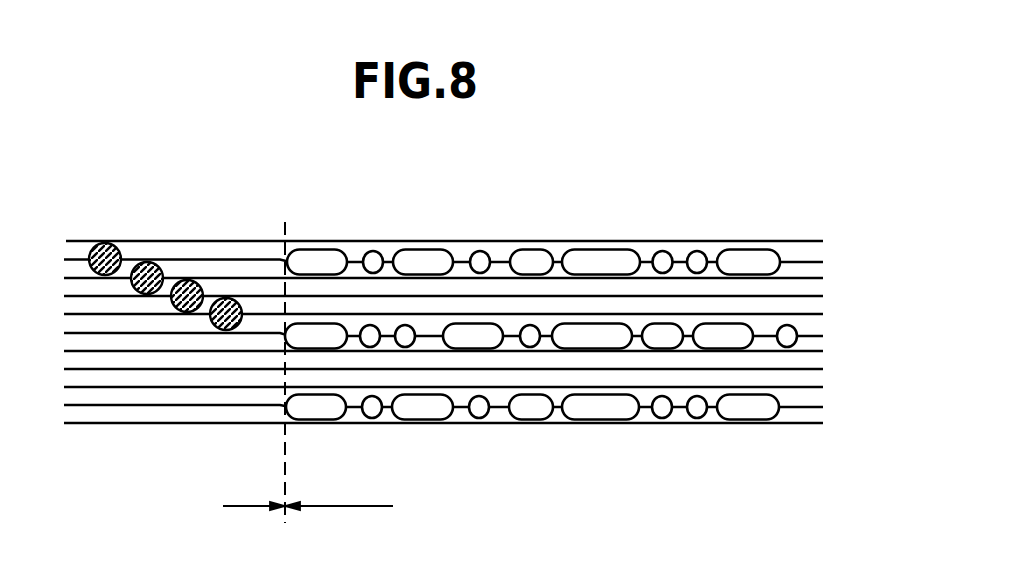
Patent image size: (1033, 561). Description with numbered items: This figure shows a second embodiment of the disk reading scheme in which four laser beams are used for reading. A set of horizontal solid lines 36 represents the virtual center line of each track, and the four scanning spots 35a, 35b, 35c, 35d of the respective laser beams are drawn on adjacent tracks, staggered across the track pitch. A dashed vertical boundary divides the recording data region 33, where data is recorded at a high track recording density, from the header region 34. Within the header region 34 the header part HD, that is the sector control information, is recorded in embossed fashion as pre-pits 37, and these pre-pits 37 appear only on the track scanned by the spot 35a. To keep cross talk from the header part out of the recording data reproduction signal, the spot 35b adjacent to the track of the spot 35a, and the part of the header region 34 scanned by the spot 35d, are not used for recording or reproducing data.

The recording data region 33 is at (236, 503).
The header region 34 is at (356, 506).
The scanning spot 35a is at (110, 250).
The scanning spot 35b is at (155, 263).
The scanning spot 35c is at (193, 283).
The scanning spot 35d is at (233, 303).
The horizontal solid lines 36 is at (200, 423).
The pre-pits 37 is at (335, 255).